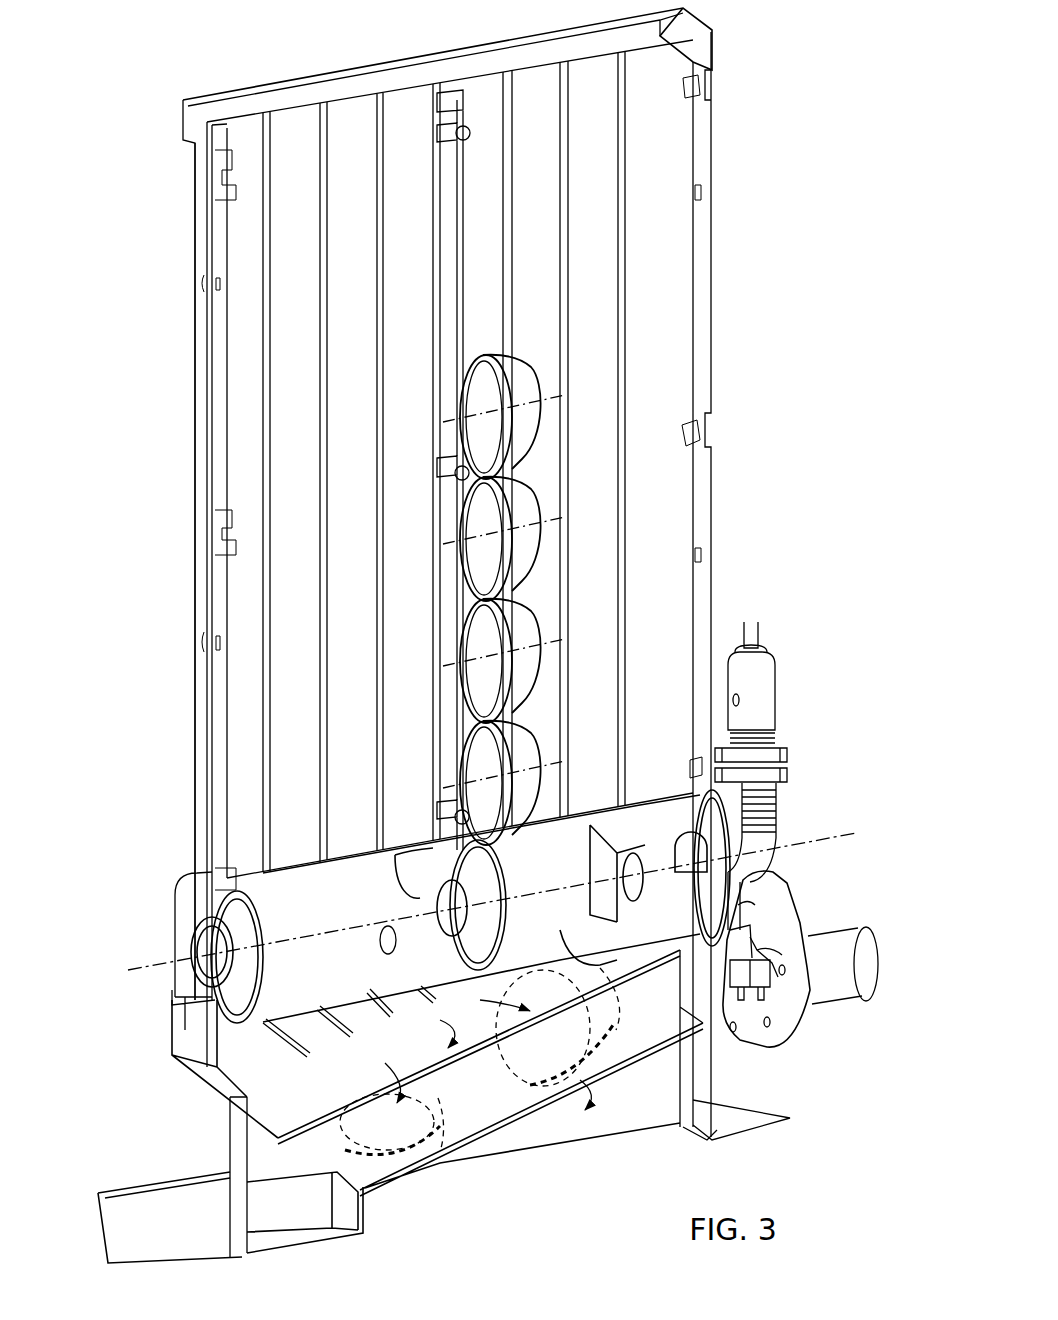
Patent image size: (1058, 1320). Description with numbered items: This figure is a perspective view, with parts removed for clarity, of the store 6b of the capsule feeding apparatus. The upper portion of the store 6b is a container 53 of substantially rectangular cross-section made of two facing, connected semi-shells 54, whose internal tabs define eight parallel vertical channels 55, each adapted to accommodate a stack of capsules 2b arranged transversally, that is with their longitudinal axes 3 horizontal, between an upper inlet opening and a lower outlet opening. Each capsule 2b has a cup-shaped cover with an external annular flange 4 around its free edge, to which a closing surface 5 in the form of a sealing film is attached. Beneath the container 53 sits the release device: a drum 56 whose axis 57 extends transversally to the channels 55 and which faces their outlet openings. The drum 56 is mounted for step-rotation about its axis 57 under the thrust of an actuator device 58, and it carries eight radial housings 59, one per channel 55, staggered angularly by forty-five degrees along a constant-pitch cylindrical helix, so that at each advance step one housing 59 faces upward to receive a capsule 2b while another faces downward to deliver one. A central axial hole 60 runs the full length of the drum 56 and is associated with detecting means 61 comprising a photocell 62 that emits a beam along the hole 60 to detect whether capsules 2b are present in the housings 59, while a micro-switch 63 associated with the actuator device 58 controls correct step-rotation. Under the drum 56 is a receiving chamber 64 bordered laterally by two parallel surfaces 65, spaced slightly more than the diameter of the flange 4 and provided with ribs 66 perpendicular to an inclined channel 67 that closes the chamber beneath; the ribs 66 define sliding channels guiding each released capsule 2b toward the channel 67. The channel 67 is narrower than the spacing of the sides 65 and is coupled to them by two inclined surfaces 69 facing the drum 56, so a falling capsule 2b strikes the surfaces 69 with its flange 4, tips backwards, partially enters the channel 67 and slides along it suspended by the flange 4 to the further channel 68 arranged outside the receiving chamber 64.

The capsule 2b is at (545, 386).
The longitudinal axis 3 is at (476, 409).
The external annular flange 4 is at (545, 1086).
The closing surface 5 is at (390, 1080).
The store 6b is at (727, 410).
The container 53 is at (185, 326).
The semi-shells 54 is at (203, 215).
The vertical channels 55 is at (602, 107).
The drum 56 is at (174, 896).
The axis 57 is at (134, 968).
The actuator device 58 is at (826, 1006).
The radial housings 59 is at (266, 880).
The central axial hole 60 is at (382, 920).
The detecting means 61 is at (784, 746).
The photocell 62 is at (763, 692).
The micro-switch 63 is at (770, 986).
The receiving chamber 64 is at (229, 1098).
The surfaces 65 is at (216, 1054).
The ribs 66 is at (286, 1042).
The inclined channel 67 is at (622, 1010).
The further channel 68 is at (290, 1212).
The surfaces 69 is at (459, 1044).